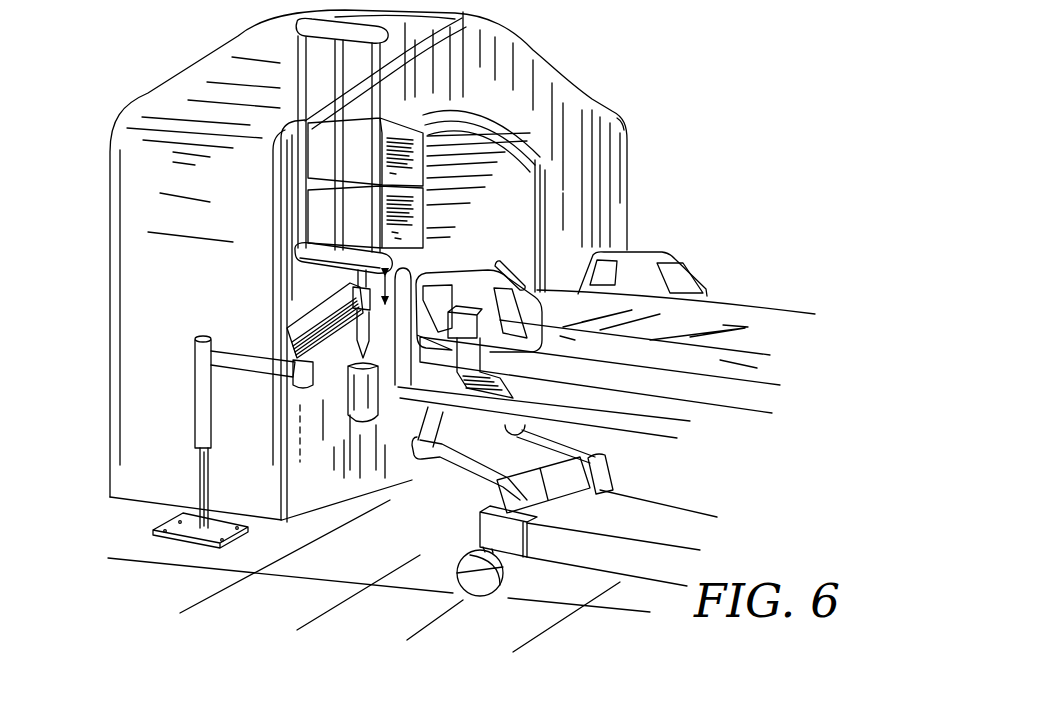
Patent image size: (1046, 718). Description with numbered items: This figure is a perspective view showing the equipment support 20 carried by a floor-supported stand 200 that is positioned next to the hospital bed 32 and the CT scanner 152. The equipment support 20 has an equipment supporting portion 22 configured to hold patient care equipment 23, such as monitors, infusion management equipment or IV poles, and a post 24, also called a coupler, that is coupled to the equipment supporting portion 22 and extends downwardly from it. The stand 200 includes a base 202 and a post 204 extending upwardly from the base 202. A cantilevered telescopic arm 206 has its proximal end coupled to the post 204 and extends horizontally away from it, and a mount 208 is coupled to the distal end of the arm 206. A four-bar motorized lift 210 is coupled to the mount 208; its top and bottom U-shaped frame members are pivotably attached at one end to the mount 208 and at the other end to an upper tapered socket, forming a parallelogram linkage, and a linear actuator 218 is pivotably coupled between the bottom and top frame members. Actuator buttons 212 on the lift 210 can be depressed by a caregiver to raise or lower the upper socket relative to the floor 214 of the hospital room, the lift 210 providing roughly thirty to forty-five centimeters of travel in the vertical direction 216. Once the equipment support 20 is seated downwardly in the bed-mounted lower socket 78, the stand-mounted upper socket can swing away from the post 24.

The equipment support 20 is at (281, 145).
The equipment supporting portion 22 is at (296, 180).
The patient care equipment 23 is at (417, 168).
The post 24 is at (380, 372).
The hospital bed 32 is at (729, 285).
The lower socket 78 is at (346, 400).
The CT scanner 152 is at (557, 60).
The floor-supported stand 200 is at (216, 440).
The base 202 is at (192, 533).
The post 204 is at (197, 491).
The cantilevered telescopic arm 206 is at (215, 352).
The mount 208 is at (298, 372).
The 4-bar motorized lift 210 is at (302, 330).
The actuator buttons 212 is at (299, 317).
The floor 214 is at (392, 566).
The vertical direction 216 is at (419, 272).
The linear actuator 218 is at (376, 338).